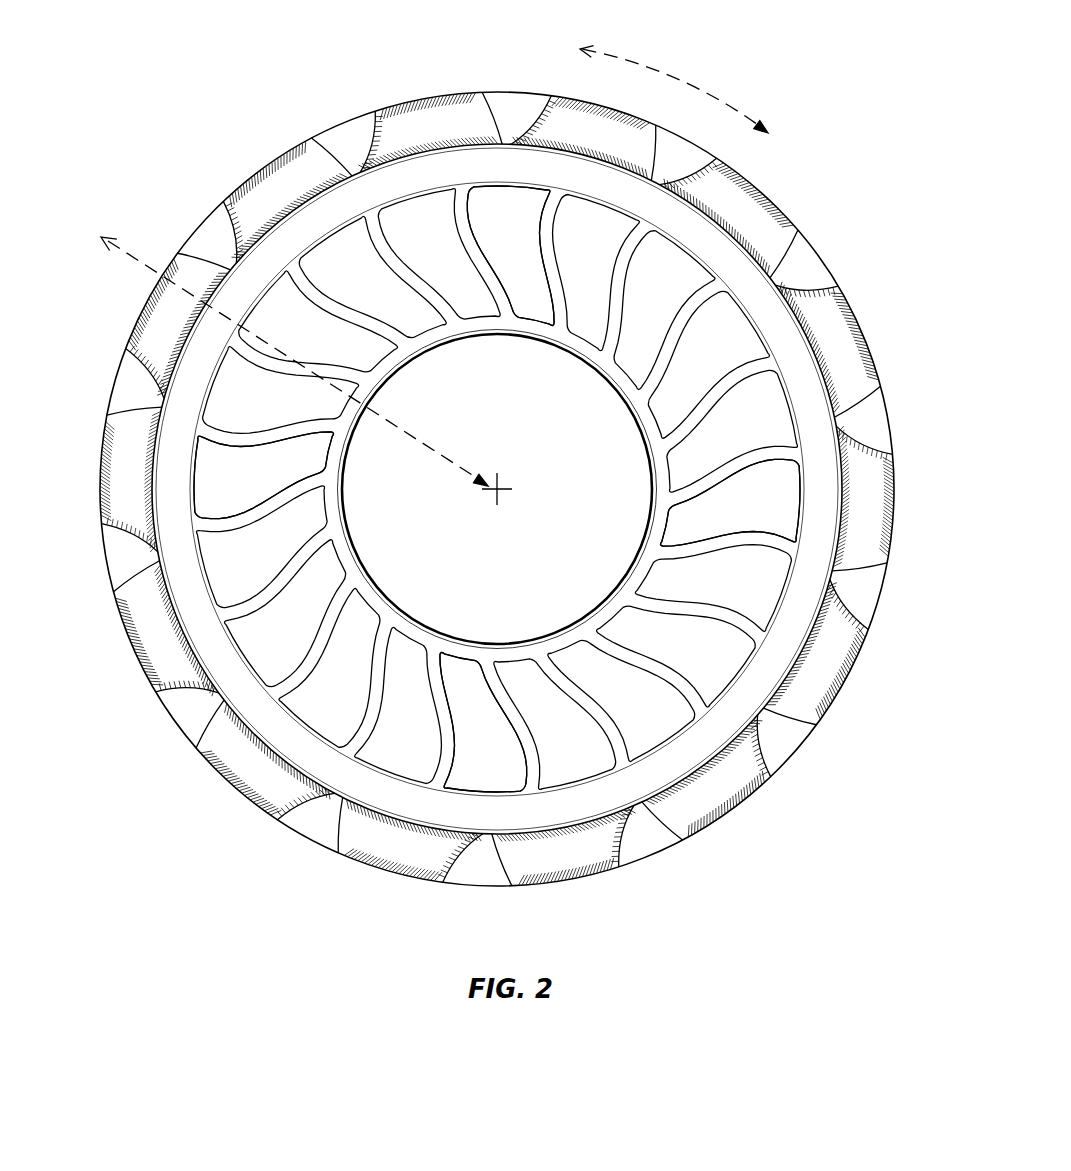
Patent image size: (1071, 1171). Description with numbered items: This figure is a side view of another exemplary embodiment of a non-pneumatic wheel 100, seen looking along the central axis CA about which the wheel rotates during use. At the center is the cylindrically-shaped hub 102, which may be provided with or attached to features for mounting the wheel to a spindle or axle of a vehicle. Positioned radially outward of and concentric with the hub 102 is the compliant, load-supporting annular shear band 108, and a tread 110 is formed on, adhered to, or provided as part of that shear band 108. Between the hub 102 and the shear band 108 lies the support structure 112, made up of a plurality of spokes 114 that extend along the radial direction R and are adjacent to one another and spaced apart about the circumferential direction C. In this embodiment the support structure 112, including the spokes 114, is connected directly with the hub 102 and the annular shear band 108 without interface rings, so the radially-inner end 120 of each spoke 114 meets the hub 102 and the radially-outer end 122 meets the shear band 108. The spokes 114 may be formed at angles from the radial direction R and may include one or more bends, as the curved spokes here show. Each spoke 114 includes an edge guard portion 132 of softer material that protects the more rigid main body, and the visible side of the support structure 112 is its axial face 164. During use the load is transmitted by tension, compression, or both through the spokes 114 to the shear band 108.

The non-pneumatic wheel 100 is at (157, 70).
The hub 102 is at (372, 597).
The annular shear band 108 is at (233, 692).
The tread 110 is at (353, 852).
The support structure 112 is at (360, 284).
The spokes 114 is at (556, 252).
The radially-inner end 120 is at (680, 477).
The radially-outer end 122 is at (205, 535).
The edge guard portion 132 is at (231, 420).
The axial face 164 is at (728, 376).
The central axis CA is at (503, 495).
The radial direction R is at (140, 266).
The circumferential direction C is at (674, 69).